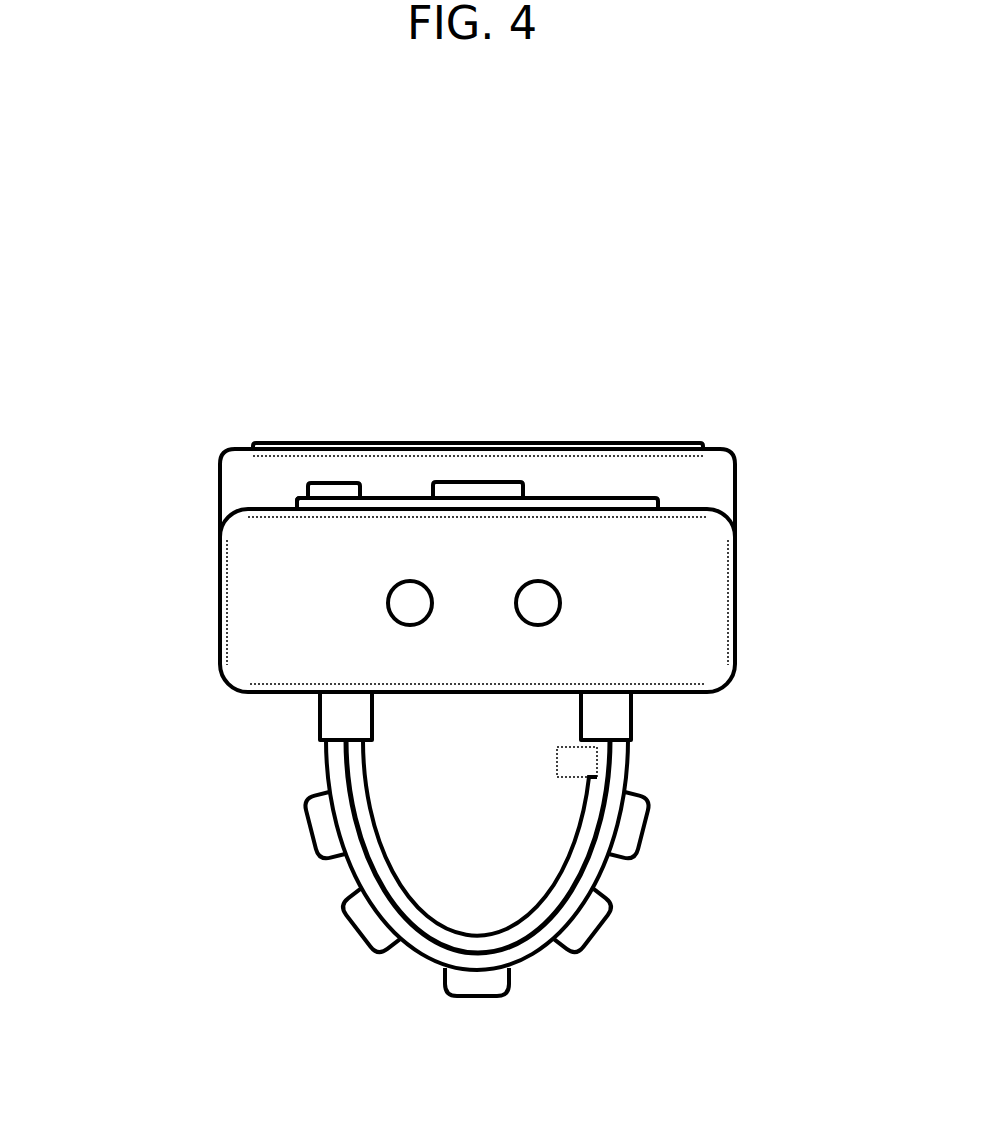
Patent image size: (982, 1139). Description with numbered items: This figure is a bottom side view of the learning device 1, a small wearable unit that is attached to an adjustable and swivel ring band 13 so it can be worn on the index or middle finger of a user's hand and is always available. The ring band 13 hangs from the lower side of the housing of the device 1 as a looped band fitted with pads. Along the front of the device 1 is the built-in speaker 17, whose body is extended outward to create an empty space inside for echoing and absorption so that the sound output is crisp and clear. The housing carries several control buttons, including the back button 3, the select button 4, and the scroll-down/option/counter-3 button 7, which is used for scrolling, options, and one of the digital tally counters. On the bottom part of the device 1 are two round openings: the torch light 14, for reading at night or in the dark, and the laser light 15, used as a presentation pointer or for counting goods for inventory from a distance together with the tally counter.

The device 1 is at (724, 702).
The back button 3 is at (292, 486).
The select button 4 is at (540, 489).
The scroll-down/option/counter-3 button 7 is at (295, 504).
The adjustable and swivel ring band 13 is at (549, 992).
The torch light 14 is at (370, 601).
The laser light 15 is at (579, 600).
The built-in speaker 17 is at (306, 426).